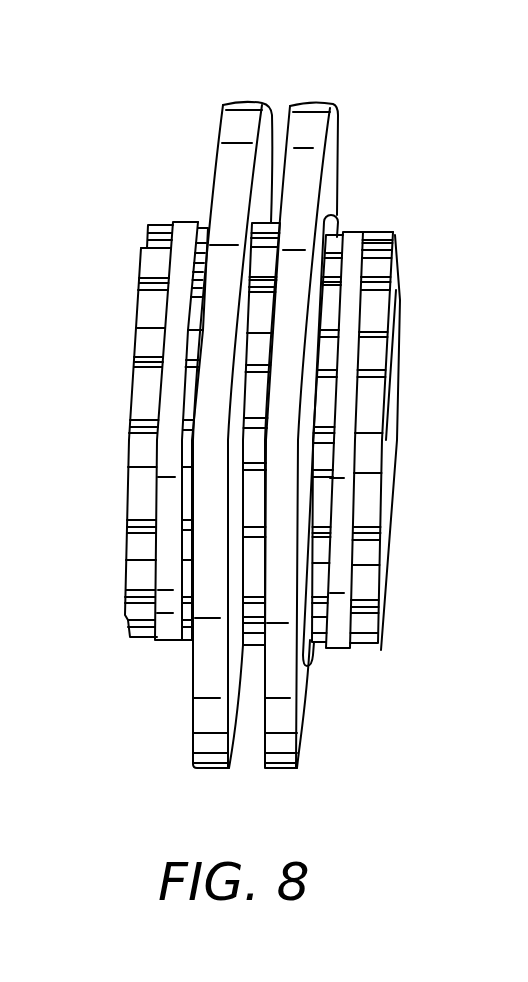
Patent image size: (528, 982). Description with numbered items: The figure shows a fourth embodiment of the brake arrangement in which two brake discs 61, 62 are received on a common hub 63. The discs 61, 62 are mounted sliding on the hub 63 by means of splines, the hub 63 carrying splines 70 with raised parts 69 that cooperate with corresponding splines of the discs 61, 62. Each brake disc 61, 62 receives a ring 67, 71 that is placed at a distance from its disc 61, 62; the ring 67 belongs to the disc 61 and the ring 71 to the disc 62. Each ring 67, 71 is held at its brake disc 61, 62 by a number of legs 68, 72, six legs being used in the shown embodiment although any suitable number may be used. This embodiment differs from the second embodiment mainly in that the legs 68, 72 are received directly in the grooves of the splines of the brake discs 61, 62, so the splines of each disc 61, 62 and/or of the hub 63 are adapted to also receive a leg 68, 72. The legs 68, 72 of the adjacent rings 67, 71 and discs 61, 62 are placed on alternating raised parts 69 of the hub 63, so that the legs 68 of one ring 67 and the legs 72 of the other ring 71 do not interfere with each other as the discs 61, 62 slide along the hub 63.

The brake disc 61 is at (243, 113).
The brake disc 62 is at (312, 120).
The hub 63 is at (413, 437).
The ring 67 is at (340, 517).
The legs 68 is at (320, 647).
The raised parts of hub splines 69 is at (372, 463).
The splines of hub 70 is at (373, 400).
The ring 71 is at (168, 627).
The legs 72 is at (112, 461).